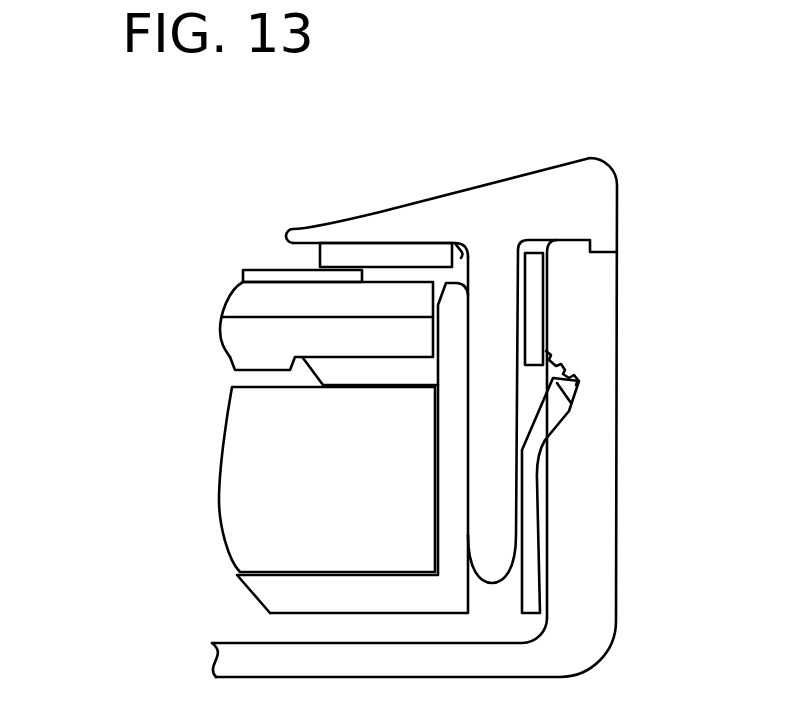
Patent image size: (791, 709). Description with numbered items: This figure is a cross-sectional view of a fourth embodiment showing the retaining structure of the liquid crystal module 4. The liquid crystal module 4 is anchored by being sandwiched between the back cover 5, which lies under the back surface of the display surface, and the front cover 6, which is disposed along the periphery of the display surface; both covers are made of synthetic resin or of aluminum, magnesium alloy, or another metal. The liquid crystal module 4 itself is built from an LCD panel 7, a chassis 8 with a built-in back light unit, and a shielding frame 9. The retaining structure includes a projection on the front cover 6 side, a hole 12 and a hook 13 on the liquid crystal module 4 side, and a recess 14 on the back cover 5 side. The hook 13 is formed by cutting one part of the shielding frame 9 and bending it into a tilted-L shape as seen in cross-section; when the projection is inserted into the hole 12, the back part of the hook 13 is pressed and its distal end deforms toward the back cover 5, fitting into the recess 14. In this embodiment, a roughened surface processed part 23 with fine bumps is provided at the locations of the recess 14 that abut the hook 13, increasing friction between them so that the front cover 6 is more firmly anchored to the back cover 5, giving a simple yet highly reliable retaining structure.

The liquid crystal module 4 is at (152, 473).
The back cover 5 is at (598, 557).
The front cover 6 is at (542, 170).
The LCD panel 7 is at (243, 337).
The chassis 8 is at (272, 591).
The shielding frame 9 is at (382, 252).
The hole 12 is at (470, 255).
The hook 13 is at (550, 413).
The recess 14 is at (550, 385).
The roughened surface processed part 23 is at (548, 366).